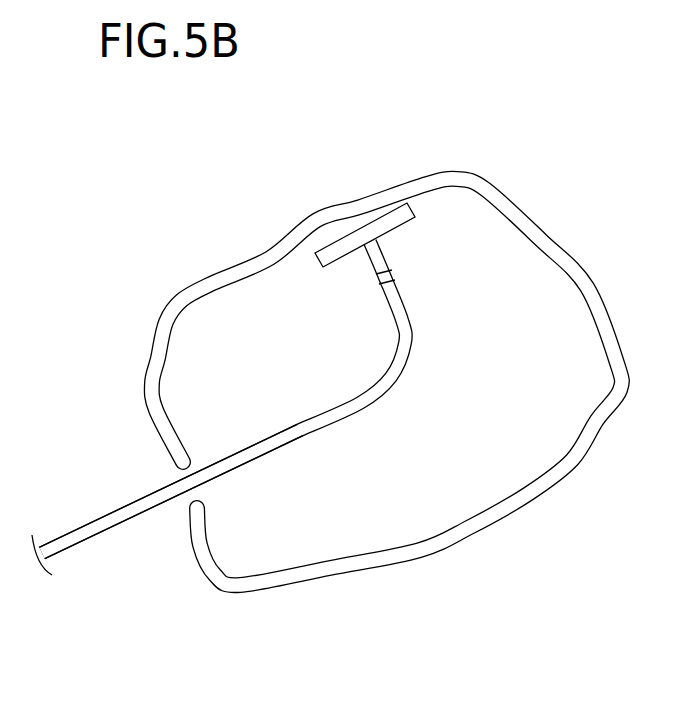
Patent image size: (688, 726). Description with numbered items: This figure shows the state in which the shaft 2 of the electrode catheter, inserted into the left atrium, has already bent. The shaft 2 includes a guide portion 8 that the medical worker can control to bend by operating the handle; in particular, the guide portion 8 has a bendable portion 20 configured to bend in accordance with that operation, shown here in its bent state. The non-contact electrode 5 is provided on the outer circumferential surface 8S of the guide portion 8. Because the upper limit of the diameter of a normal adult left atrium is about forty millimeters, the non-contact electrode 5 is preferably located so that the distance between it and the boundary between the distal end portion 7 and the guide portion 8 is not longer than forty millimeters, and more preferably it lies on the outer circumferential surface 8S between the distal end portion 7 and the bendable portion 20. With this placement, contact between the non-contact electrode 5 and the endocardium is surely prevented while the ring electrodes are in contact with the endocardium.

The bendable portion 20 is at (407, 357).
The guide portion 8 is at (313, 423).
The outer circumferential surface 8S is at (285, 442).
The distal end portion 7 is at (338, 247).
The non-contact electrode 5 is at (386, 276).
The shaft 2 is at (271, 490).